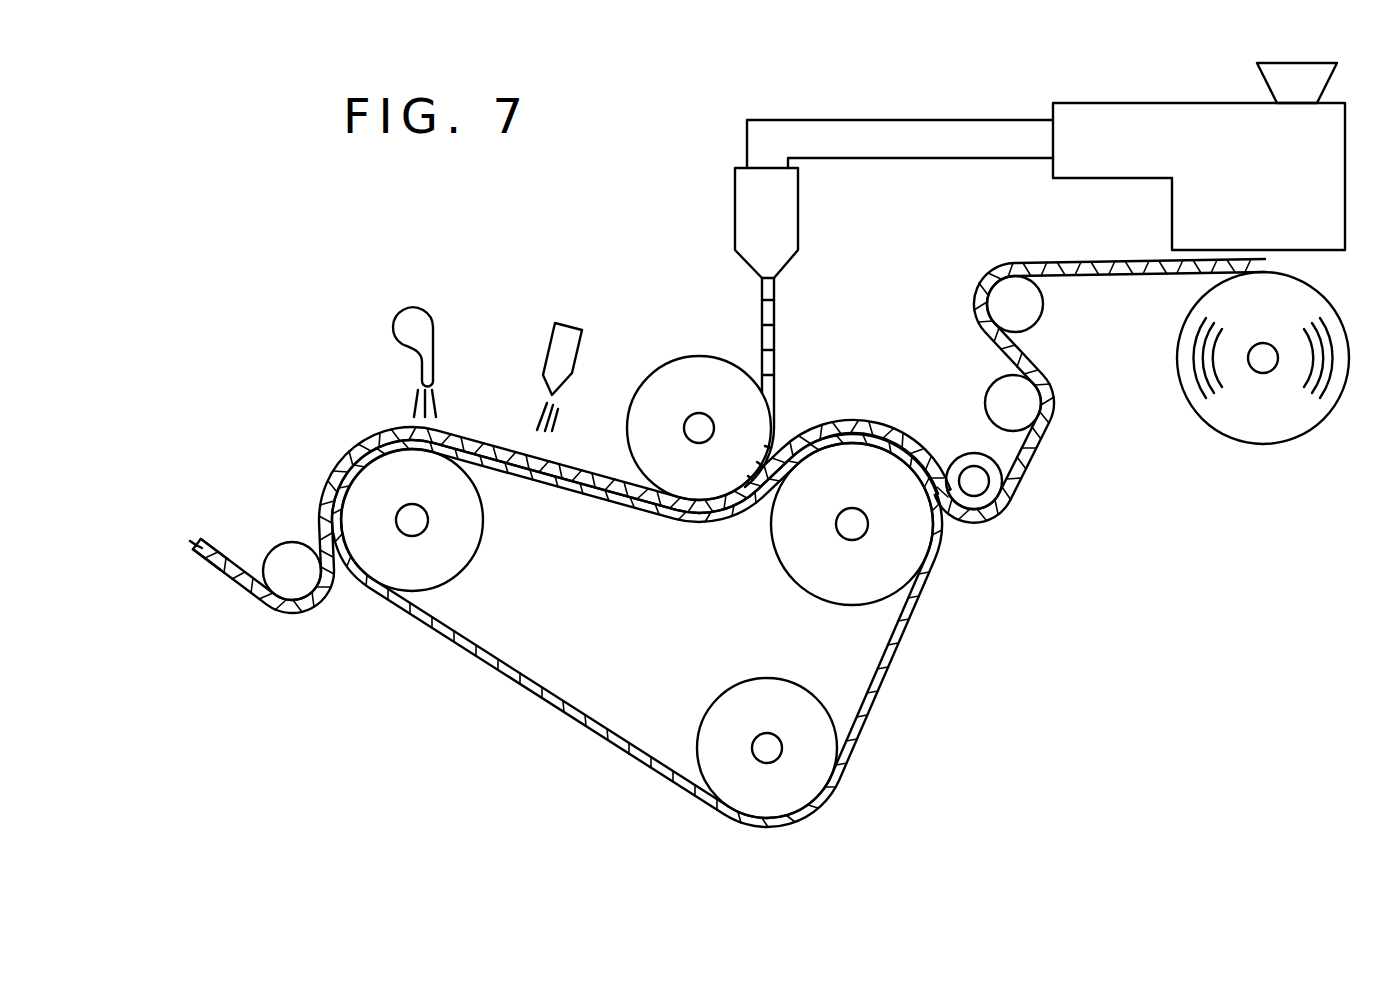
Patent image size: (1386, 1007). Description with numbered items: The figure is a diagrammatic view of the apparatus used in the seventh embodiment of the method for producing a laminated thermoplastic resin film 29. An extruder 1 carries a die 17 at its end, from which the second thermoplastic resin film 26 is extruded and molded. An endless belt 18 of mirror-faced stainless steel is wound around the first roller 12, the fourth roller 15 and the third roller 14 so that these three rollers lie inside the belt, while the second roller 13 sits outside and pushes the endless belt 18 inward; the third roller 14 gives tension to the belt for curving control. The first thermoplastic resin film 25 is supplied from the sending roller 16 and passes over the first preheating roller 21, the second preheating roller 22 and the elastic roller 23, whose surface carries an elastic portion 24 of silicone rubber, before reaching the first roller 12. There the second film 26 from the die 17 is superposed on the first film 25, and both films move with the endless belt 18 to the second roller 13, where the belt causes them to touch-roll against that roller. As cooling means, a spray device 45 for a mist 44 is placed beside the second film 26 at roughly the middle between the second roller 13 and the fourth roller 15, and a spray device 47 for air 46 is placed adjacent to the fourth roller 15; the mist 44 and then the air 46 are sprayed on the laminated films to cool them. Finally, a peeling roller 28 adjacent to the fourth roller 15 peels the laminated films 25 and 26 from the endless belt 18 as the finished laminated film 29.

The extruder 1 is at (1333, 175).
The die 17 is at (795, 208).
The second roller 13 is at (688, 378).
The first roller 12 is at (853, 572).
The third roller 14 is at (716, 735).
The fourth roller 15 is at (455, 555).
The endless belt 18 is at (878, 700).
The first preheating roller 21 is at (1035, 301).
The second preheating roller 22 is at (1012, 386).
The elastic roller 23 is at (976, 489).
The elastic portion 24 is at (972, 458).
The first thermoplastic resin film 25 is at (1150, 277).
The second thermoplastic resin film 26 is at (322, 487).
The peeling roller 28 is at (283, 556).
The laminated thermoplastic resin film 29 is at (205, 568).
The sending roller 16 is at (1265, 438).
The spray device for air 47 is at (415, 315).
The air 46 is at (437, 405).
The spray device for mist 45 is at (568, 330).
The mist 44 is at (553, 425).